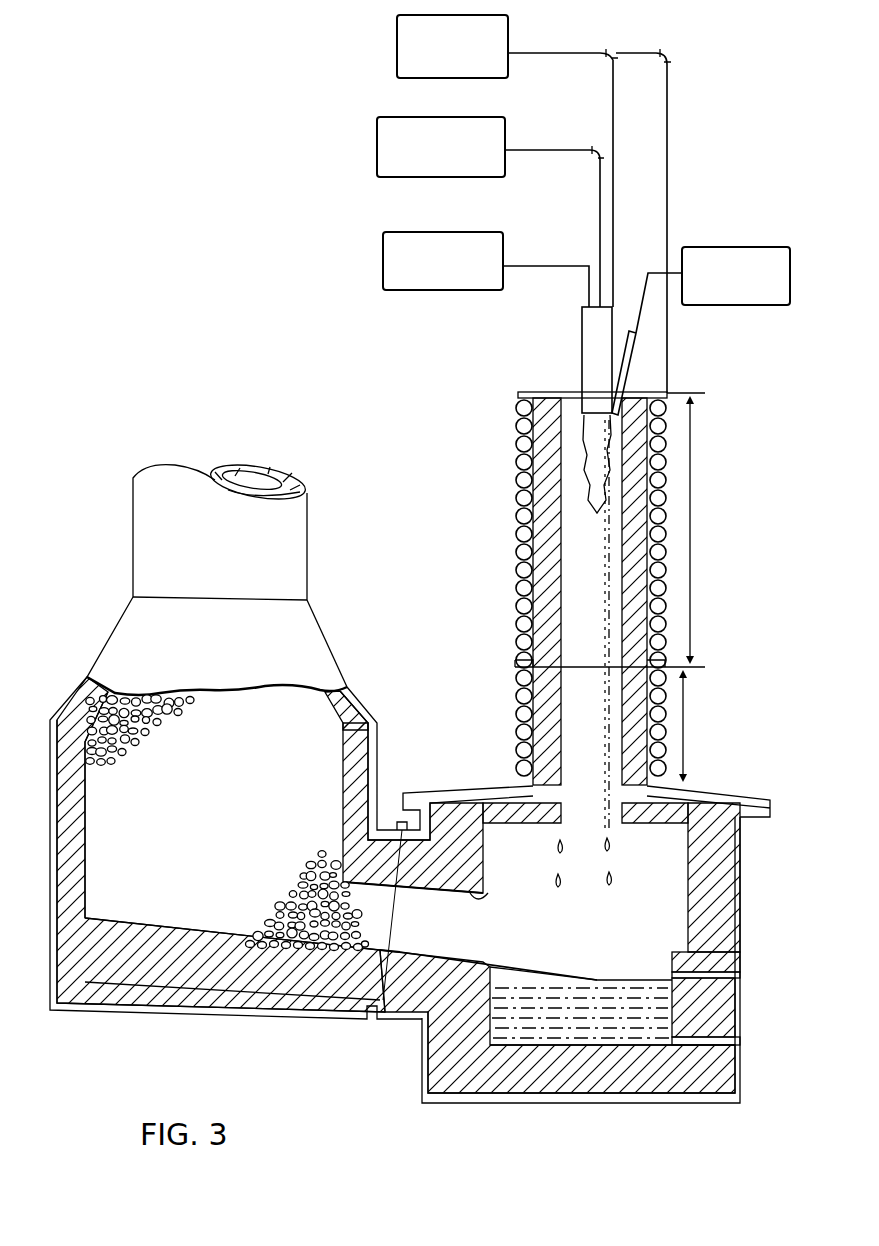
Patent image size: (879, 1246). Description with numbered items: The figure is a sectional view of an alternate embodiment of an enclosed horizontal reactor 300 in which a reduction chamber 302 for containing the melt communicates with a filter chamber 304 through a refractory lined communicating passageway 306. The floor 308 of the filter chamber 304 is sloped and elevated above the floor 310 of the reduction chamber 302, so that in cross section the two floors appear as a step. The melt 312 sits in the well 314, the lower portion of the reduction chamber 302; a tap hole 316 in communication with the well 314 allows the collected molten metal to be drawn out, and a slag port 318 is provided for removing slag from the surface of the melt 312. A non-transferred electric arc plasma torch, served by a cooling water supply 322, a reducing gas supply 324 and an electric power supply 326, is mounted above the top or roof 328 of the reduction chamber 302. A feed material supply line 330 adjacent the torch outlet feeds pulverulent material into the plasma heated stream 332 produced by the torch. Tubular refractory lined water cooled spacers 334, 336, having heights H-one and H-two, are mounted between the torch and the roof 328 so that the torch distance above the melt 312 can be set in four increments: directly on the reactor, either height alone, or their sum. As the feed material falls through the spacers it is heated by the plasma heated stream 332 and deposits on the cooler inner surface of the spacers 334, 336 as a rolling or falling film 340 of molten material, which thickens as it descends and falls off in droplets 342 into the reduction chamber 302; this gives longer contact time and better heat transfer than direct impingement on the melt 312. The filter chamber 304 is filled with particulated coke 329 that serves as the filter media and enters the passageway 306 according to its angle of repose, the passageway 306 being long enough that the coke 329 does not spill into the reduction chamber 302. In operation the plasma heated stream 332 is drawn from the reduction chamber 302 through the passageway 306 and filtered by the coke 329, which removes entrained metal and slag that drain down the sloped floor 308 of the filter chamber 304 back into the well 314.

The enclosed horizontal reactor 300 is at (266, 1062).
The reduction chamber 302 is at (746, 884).
The filter chamber 304 is at (355, 700).
The refractory lined communicating passageway 306 is at (488, 893).
The floor of the filter chamber 308 is at (103, 918).
The floor of the reduction chamber 310 is at (620, 1042).
The melt 312 is at (592, 980).
The well 314 is at (490, 953).
The tap hole 316 is at (742, 1042).
The slag port 318 is at (744, 964).
The cooling water supply 322 is at (397, 32).
The reducing gas supply 324 is at (377, 130).
The electric power supply 326 is at (383, 243).
The top or roof of the reduction chamber 328 is at (480, 792).
The particulated coke 329 is at (392, 925).
The feed material supply line 330 is at (762, 208).
The plasma heated stream 332 is at (588, 512).
The tubular refractory lined water cooled spacer 334 is at (516, 704).
The tubular refractory lined water cooled spacer 336 is at (518, 586).
The rolling or falling film of molten material 340 is at (601, 642).
The droplets 342 is at (562, 888).